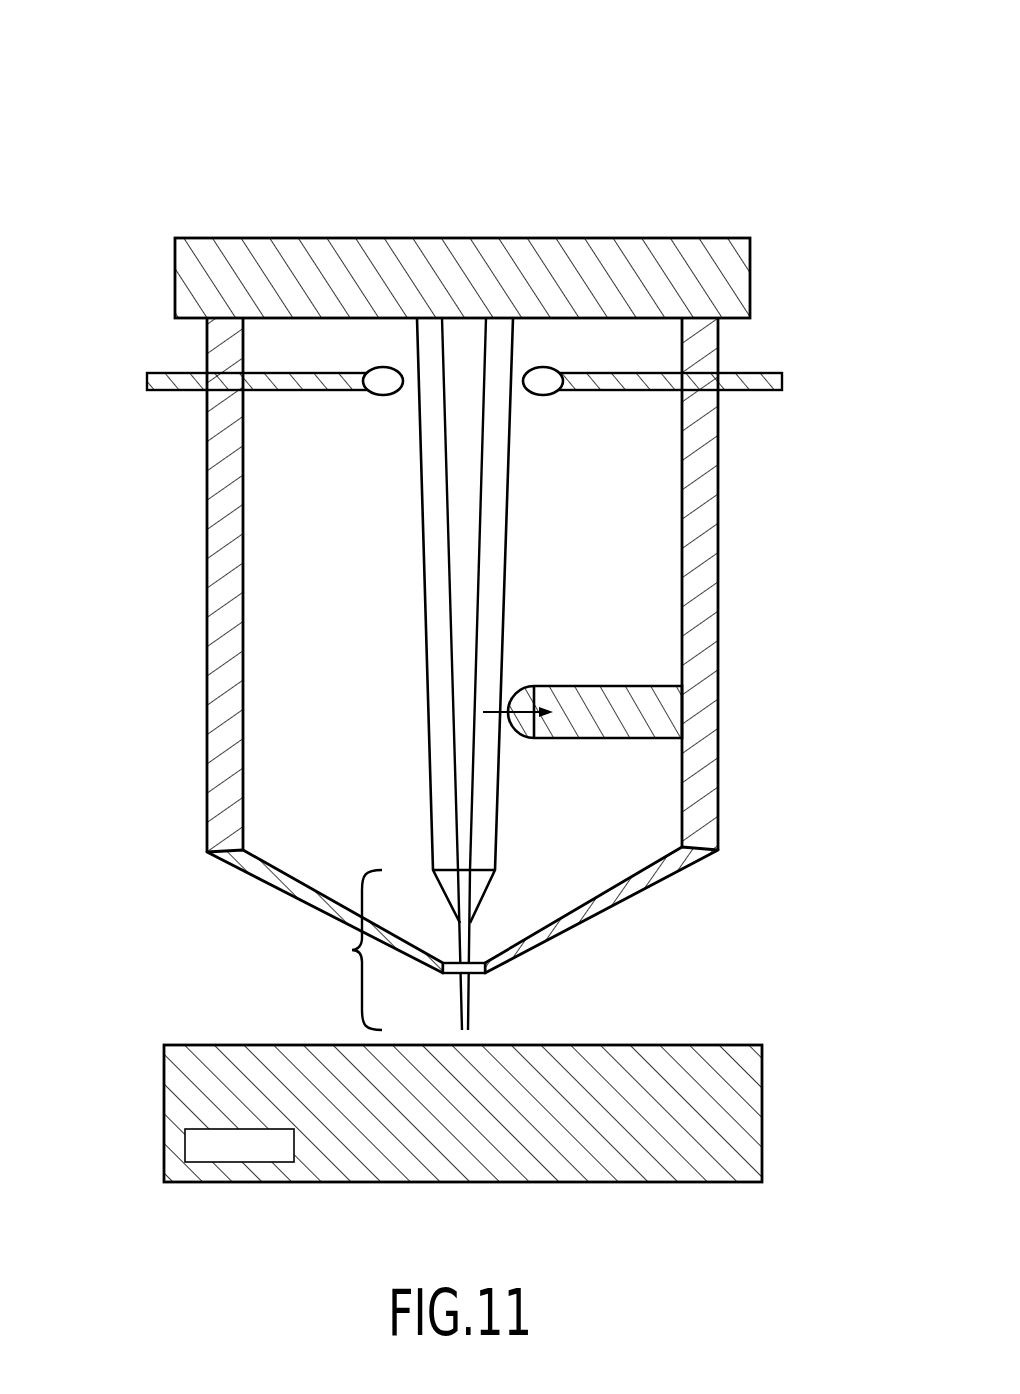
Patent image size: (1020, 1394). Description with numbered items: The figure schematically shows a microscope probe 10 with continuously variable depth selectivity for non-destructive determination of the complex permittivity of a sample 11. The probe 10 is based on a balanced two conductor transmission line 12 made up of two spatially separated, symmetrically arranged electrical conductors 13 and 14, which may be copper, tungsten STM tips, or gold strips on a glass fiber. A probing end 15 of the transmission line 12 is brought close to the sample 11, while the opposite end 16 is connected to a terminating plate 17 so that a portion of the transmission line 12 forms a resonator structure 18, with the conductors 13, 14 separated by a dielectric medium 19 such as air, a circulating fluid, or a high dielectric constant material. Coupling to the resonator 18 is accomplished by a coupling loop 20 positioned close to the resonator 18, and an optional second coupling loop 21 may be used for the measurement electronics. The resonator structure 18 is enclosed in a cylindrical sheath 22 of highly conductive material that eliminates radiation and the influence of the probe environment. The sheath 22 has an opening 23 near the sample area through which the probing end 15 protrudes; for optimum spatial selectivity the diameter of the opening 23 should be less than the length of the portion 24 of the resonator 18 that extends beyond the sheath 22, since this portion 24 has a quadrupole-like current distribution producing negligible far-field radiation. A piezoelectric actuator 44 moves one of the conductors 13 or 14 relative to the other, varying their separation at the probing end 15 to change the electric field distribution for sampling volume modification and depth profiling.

The probe 10 is at (790, 150).
The sample 11 is at (164, 1070).
The balanced two conductor transmission line 12 is at (548, 564).
The electrical conductor 13 is at (435, 572).
The electrical conductor 14 is at (498, 448).
The probing end 15 is at (342, 950).
The opposite end 16 is at (515, 320).
The terminating plate 17 is at (752, 275).
The resonator structure 18 is at (428, 645).
The dielectric medium 19 is at (472, 366).
The coupling loop 20 is at (782, 375).
The second coupling loop 21 is at (188, 383).
The cylindrical sheath 22 is at (217, 668).
The opening 23 is at (480, 970).
The portion of the resonator extending beyond the sheath 24 is at (490, 1020).
The piezoelectric actuator 44 is at (644, 705).